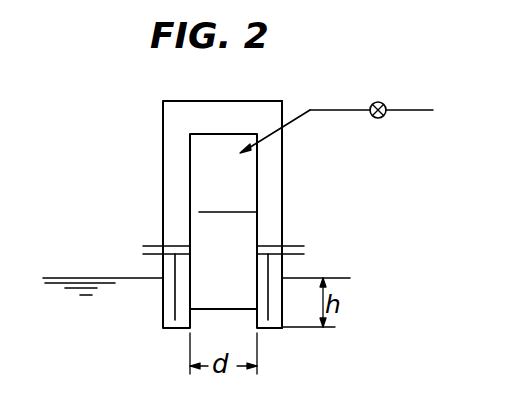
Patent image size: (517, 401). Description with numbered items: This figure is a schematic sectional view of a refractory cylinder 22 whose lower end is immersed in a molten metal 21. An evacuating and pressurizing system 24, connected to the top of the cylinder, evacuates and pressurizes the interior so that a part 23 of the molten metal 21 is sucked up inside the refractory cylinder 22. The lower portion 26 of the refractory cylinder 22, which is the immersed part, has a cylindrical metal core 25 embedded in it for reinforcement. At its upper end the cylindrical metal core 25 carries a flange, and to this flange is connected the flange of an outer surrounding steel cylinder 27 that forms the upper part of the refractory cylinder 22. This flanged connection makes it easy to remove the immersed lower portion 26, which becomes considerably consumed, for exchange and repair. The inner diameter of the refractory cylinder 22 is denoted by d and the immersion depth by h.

The molten metal 21 is at (88, 292).
The refractory cylinder 22 is at (172, 121).
The part of molten metal 23 is at (199, 213).
The evacuating and pressurizing system 24 is at (300, 112).
The cylindrical metal core 25 is at (271, 270).
The lower portion 26 is at (168, 268).
The outer surrounding steel cylinder 27 is at (283, 208).